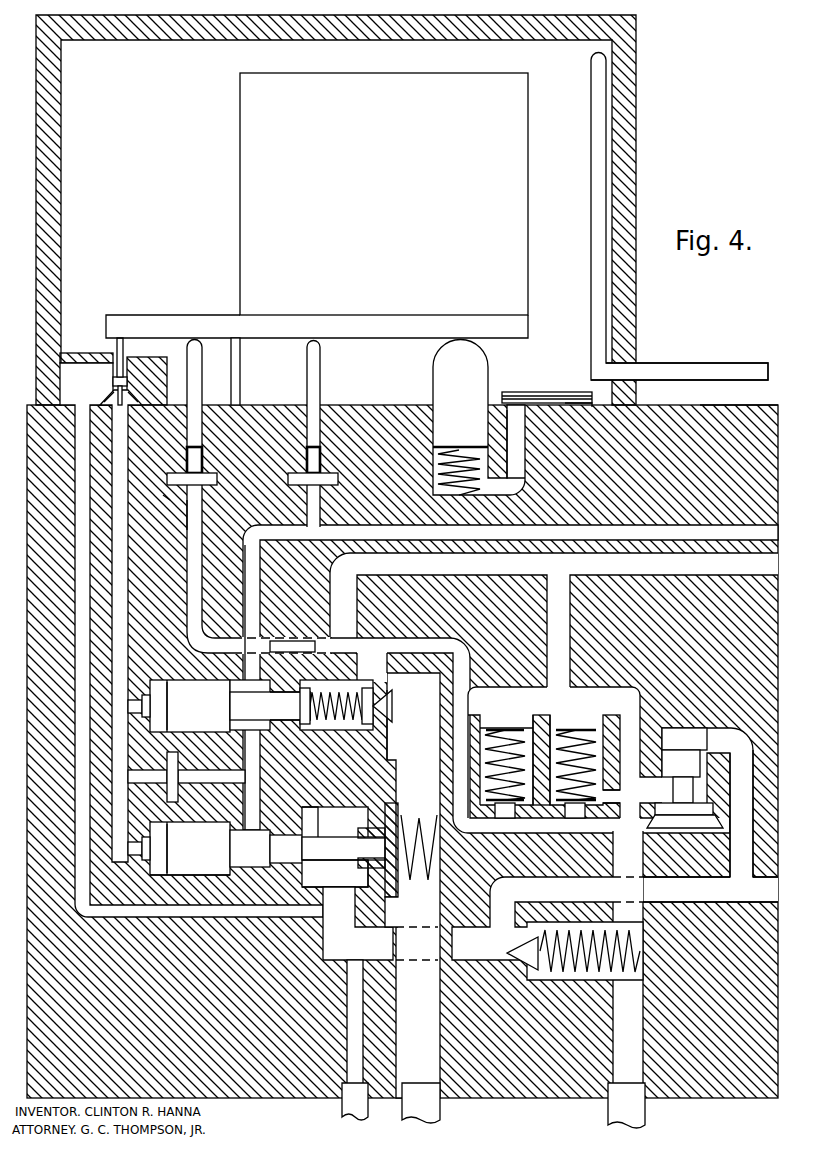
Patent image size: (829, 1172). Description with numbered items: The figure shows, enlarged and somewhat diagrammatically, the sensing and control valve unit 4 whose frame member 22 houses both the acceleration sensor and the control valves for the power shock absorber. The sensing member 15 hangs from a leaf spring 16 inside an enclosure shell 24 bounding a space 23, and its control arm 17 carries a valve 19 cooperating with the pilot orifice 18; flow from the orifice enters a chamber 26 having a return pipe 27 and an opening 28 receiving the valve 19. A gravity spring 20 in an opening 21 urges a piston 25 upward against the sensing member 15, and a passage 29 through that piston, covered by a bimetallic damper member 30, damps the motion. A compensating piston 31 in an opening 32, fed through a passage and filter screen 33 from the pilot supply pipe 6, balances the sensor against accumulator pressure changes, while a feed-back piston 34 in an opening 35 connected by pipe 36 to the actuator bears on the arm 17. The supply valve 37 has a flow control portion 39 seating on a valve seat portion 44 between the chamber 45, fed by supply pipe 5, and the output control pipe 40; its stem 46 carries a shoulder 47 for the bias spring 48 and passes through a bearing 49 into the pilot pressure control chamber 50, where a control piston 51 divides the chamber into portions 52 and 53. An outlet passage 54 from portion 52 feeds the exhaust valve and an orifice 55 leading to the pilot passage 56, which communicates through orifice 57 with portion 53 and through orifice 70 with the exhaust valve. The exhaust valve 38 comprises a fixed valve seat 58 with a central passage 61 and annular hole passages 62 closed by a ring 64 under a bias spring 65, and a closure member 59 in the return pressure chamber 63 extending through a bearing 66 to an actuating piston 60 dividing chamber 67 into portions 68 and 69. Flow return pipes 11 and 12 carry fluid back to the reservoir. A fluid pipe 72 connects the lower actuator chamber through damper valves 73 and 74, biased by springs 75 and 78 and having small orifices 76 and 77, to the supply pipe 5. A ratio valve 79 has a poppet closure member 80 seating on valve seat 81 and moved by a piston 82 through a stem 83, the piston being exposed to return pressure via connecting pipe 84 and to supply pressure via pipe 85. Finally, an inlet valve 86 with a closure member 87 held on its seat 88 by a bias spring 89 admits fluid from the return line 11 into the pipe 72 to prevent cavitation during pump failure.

The sensing and control valve unit 4 is at (688, 406).
The supply pipe 5 is at (778, 588).
The pilot supply pipe 6 is at (778, 522).
The flow return pipe 11 is at (776, 876).
The flow return pipe 12 is at (699, 366).
The sensing member 15 is at (353, 121).
The leaf spring 16 is at (241, 380).
The control arm 17 is at (156, 315).
The pilot orifice 18 is at (126, 390).
The valve 19 is at (116, 345).
The gravity spring 20 is at (436, 447).
The opening 21 is at (480, 450).
The frame member 22 is at (735, 410).
The space 23 is at (602, 135).
The enclosure shell 24 is at (636, 76).
The piston 25 is at (460, 345).
The chamber 26 is at (60, 378).
The fluid return pipe 27 is at (112, 410).
The opening 28 is at (113, 356).
The passage 29 is at (507, 410).
The bimetallic damper member 30 is at (530, 392).
The compensating piston 31 is at (320, 373).
The opening 32 is at (321, 460).
The passage and filter screen 33 is at (288, 480).
The feed-back piston 34 is at (202, 371).
The opening 35 is at (202, 460).
The pipe 36 is at (187, 514).
The supply valve 37 is at (161, 672).
The exhaust valve 38 is at (198, 814).
The fluid flow control portion 39 is at (392, 712).
The fluid output control pipe 40 is at (441, 1108).
The valve seat portion 44 is at (388, 728).
The chamber 45 is at (323, 732).
The actuating stem 46 is at (305, 722).
The shoulder 47 is at (322, 692).
The bias spring 48 is at (362, 732).
The bearing 49 is at (290, 706).
The pilot pressure control chamber 50 is at (212, 672).
The control piston 51 is at (230, 709).
The chamber portion 52 is at (230, 700).
The chamber portion 53 is at (160, 701).
The outlet passage 54 is at (245, 745).
The orifice 55 is at (142, 776).
The passage 56 is at (163, 495).
The orifice 57 is at (135, 697).
The fixed valve seat 58 is at (362, 868).
The valve closure member 59 is at (340, 840).
The actuating piston 60 is at (236, 850).
The passage 61 is at (362, 851).
The hole passages 62 is at (392, 803).
The return pressure chamber 63 is at (328, 892).
The closure ring 64 is at (404, 908).
The bias spring 65 is at (418, 818).
The bearing 66 is at (296, 826).
The chamber 67 is at (245, 878).
The chamber portion 68 is at (160, 858).
The chamber portion 69 is at (287, 849).
The orifice 70 is at (137, 858).
The fluid pipe 72 is at (645, 1117).
The damper valve 73 is at (508, 730).
The damper valve 74 is at (612, 798).
The spring 75 is at (505, 821).
The orifice 76 is at (494, 730).
The orifice 77 is at (575, 818).
The bias spring 78 is at (572, 730).
The ratio valve 79 is at (710, 793).
The valve closure member 80 is at (700, 832).
The valve seat 81 is at (718, 810).
The piston 82 is at (700, 746).
The stem 83 is at (700, 777).
The connecting pipe 84 is at (756, 770).
The pipe 85 is at (632, 692).
The inlet valve 86 is at (527, 998).
The valve closure member 87 is at (528, 968).
The valve seat 88 is at (508, 950).
The bias spring 89 is at (632, 975).